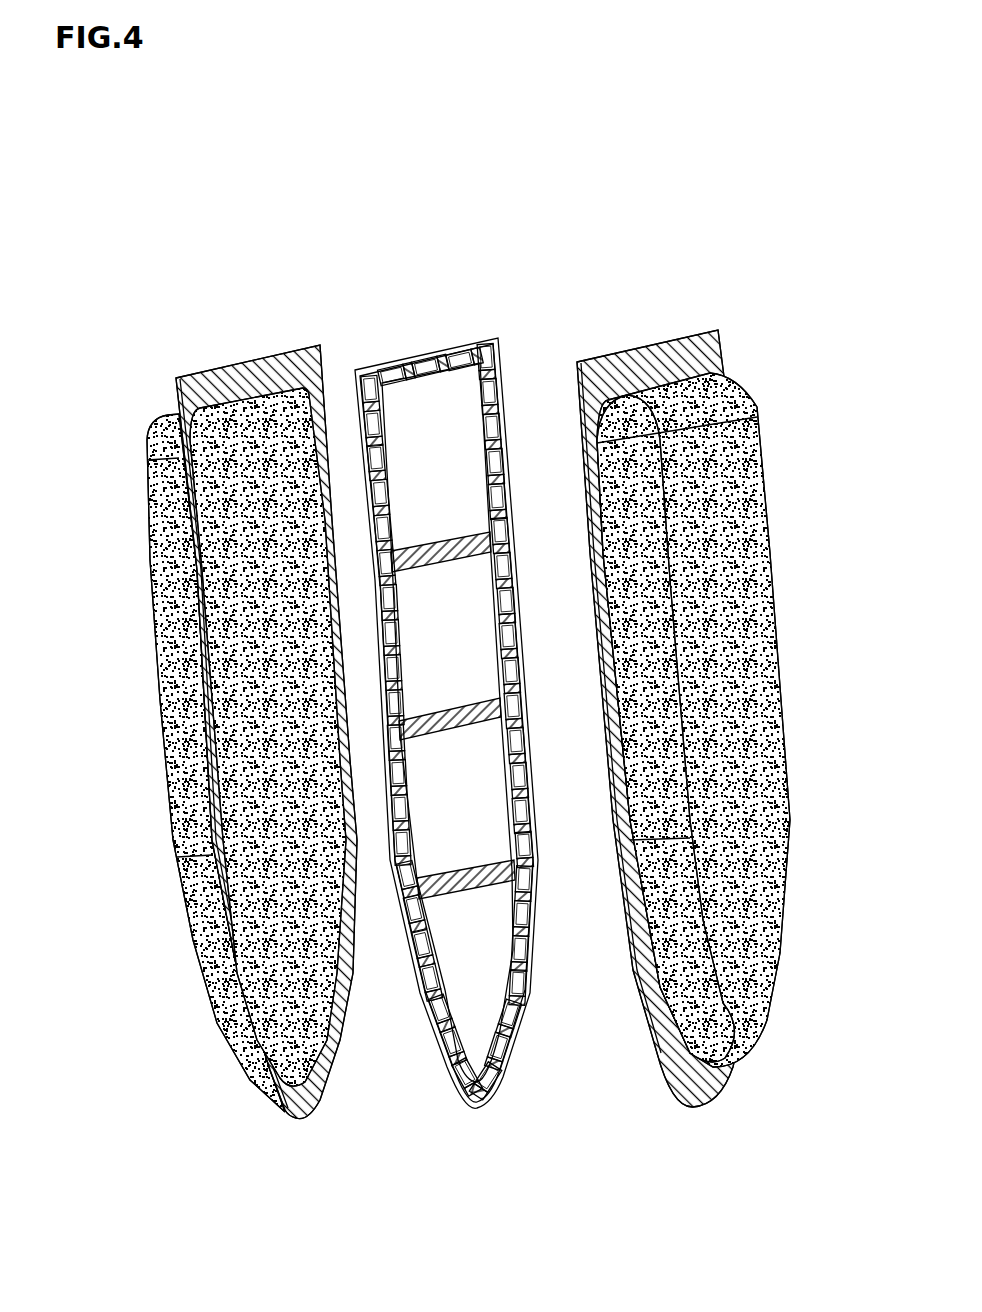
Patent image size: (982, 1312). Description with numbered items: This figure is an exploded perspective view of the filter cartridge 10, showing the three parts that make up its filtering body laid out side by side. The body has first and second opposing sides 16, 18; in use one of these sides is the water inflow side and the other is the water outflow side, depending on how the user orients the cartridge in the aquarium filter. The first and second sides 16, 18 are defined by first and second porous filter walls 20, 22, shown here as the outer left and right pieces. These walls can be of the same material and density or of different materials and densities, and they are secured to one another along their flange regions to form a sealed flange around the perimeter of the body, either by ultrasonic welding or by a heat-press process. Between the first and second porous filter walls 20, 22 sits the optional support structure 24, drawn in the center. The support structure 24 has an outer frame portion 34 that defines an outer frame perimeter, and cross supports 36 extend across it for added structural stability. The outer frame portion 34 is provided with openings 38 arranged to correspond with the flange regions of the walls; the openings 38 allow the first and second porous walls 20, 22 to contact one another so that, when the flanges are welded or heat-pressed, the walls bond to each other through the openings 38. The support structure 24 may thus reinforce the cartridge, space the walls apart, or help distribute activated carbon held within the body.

The filter cartridge 10 is at (196, 284).
The first side 16 is at (133, 772).
The second side 18 is at (799, 682).
The first porous filter wall 20 is at (160, 565).
The second porous filter wall 22 is at (738, 515).
The support structure 24 is at (440, 360).
The outer frame portion 34 is at (505, 372).
The cross supports 36 is at (425, 550).
The openings 38 is at (498, 497).